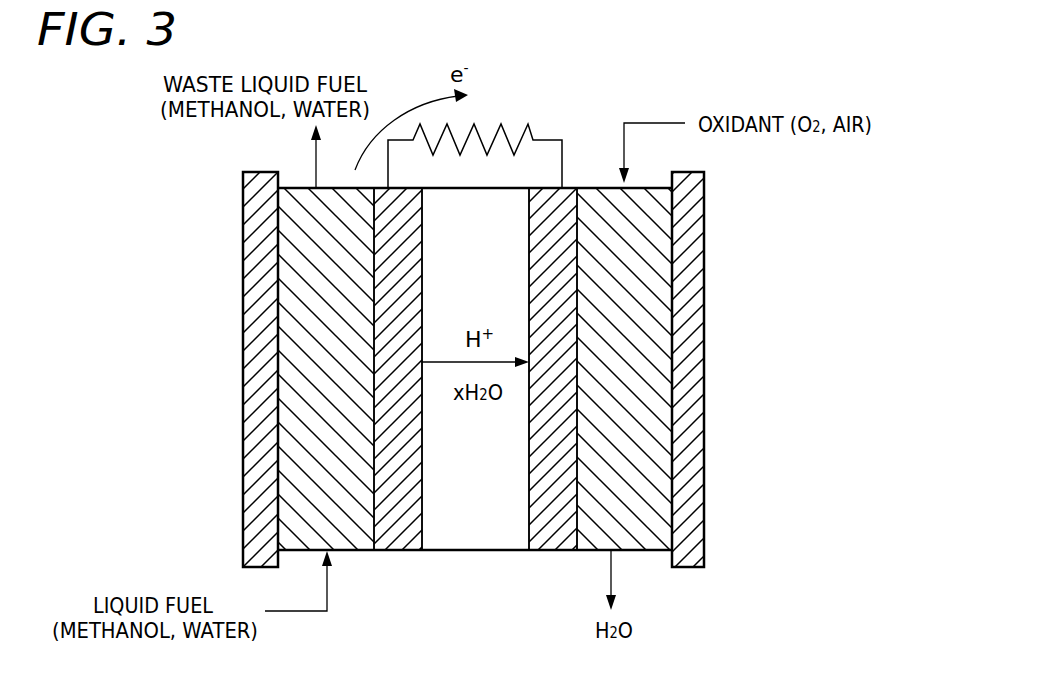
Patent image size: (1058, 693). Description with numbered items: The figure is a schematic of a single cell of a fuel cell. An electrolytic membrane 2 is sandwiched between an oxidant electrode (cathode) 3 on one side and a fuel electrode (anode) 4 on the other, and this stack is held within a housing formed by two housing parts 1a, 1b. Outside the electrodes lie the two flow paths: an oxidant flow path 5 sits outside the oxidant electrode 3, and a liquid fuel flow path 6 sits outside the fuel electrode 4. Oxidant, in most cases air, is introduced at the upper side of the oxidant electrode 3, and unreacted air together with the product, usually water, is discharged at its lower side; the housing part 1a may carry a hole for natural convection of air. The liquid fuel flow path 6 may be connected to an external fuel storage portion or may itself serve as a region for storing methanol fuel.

The housing part 1a is at (686, 327).
The housing part 1b is at (262, 503).
The electrolytic membrane 2 is at (482, 234).
The oxidant electrode 3 is at (559, 432).
The fuel electrode 4 is at (388, 328).
The oxidant flow path 5 is at (623, 510).
The liquid fuel flow path 6 is at (327, 408).